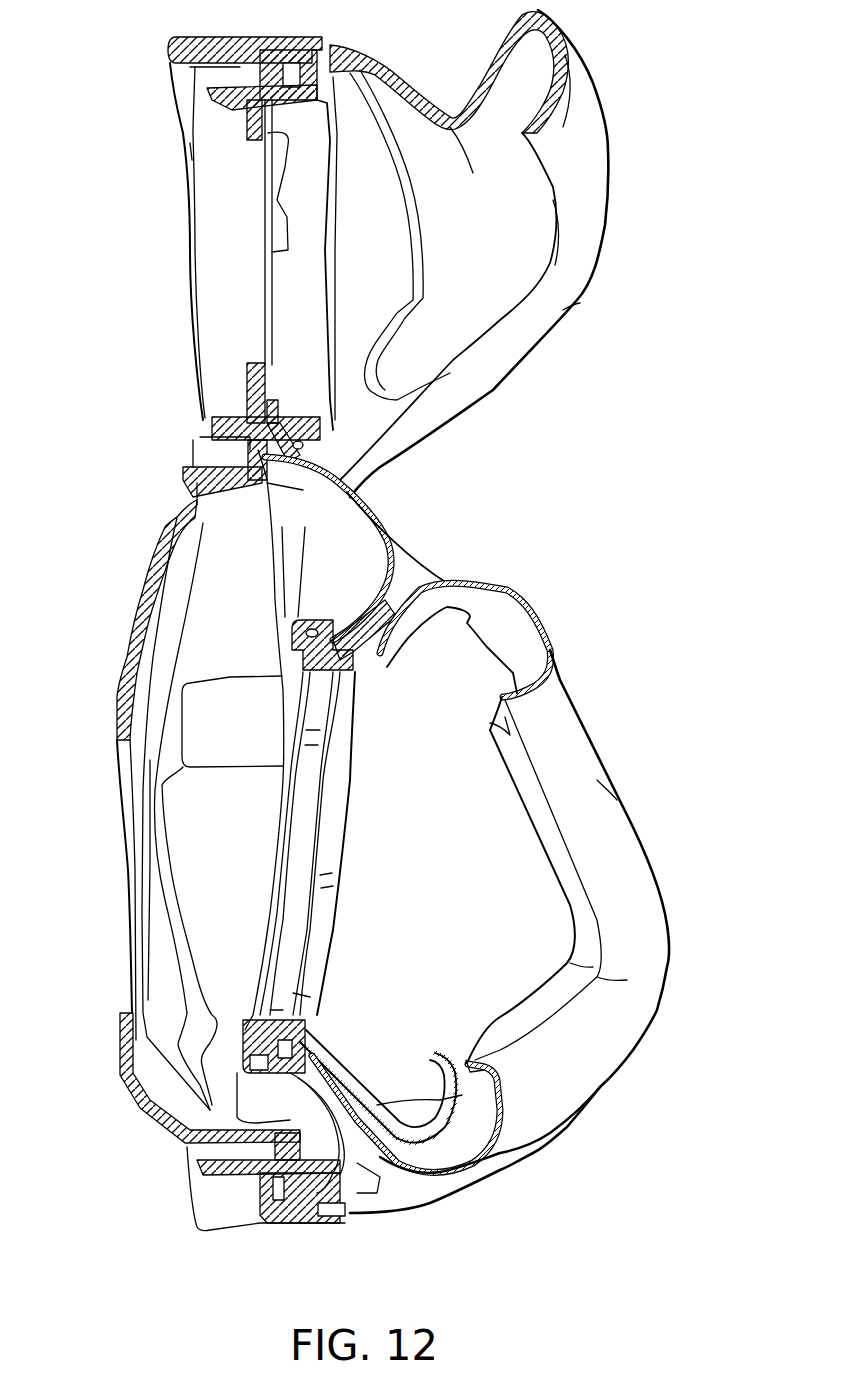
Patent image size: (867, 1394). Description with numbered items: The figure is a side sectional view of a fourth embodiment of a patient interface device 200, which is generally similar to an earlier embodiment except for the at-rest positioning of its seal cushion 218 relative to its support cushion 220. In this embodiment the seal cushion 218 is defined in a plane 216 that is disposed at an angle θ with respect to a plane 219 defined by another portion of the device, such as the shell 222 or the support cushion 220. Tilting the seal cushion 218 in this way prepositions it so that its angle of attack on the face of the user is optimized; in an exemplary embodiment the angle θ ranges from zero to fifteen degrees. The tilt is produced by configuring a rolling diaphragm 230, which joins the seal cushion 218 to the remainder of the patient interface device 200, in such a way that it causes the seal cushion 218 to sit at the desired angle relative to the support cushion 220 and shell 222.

The patient interface device 200 is at (656, 388).
The plane 216 is at (380, 533).
The seal cushion 218 is at (567, 767).
The plane 219 is at (413, 532).
The support cushion 220 is at (487, 372).
The shell 222 is at (170, 510).
The rolling diaphragm 230 is at (380, 517).